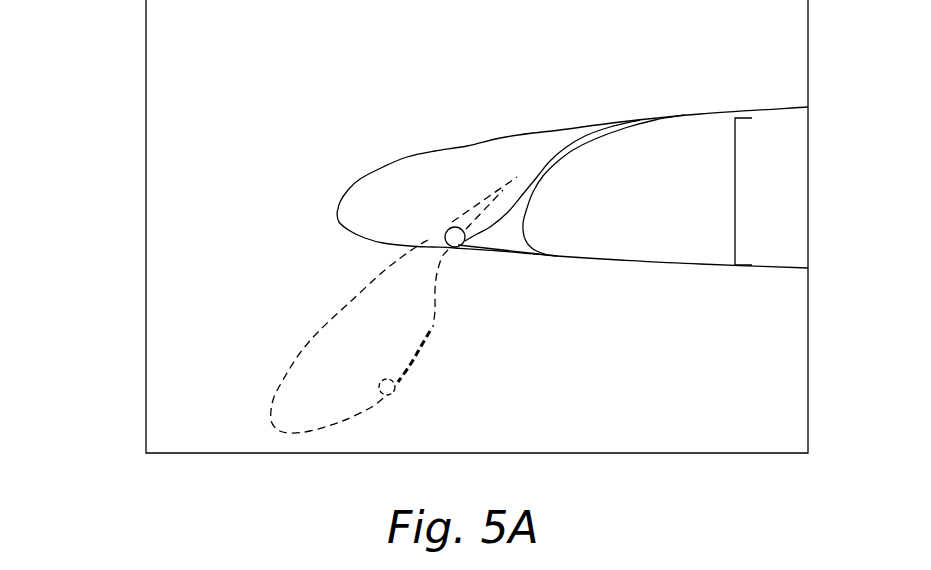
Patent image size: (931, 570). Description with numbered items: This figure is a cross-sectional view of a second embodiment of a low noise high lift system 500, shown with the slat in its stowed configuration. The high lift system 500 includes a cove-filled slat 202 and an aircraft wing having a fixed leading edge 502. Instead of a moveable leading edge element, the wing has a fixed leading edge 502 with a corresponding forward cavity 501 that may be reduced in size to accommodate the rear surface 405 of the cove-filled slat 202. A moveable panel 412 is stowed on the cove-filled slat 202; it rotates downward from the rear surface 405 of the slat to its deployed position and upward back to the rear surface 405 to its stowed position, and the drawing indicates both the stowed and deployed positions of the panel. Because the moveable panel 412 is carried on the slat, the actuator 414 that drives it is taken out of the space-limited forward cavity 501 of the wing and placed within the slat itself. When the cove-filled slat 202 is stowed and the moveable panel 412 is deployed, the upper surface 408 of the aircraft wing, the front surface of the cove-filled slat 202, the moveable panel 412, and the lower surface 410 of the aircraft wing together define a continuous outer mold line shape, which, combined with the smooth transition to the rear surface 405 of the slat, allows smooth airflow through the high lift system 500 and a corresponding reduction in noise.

The high lift system 500 is at (118, 28).
The cove-filled slat 202 is at (397, 163).
The rear surface 405 is at (521, 182).
The upper surface 408 is at (733, 108).
The lower surface 410 is at (645, 263).
The moveable panel 412 is at (517, 254).
The actuator 414 is at (447, 231).
The forward cavity 501 is at (698, 177).
The fixed leading edge 502 is at (541, 186).